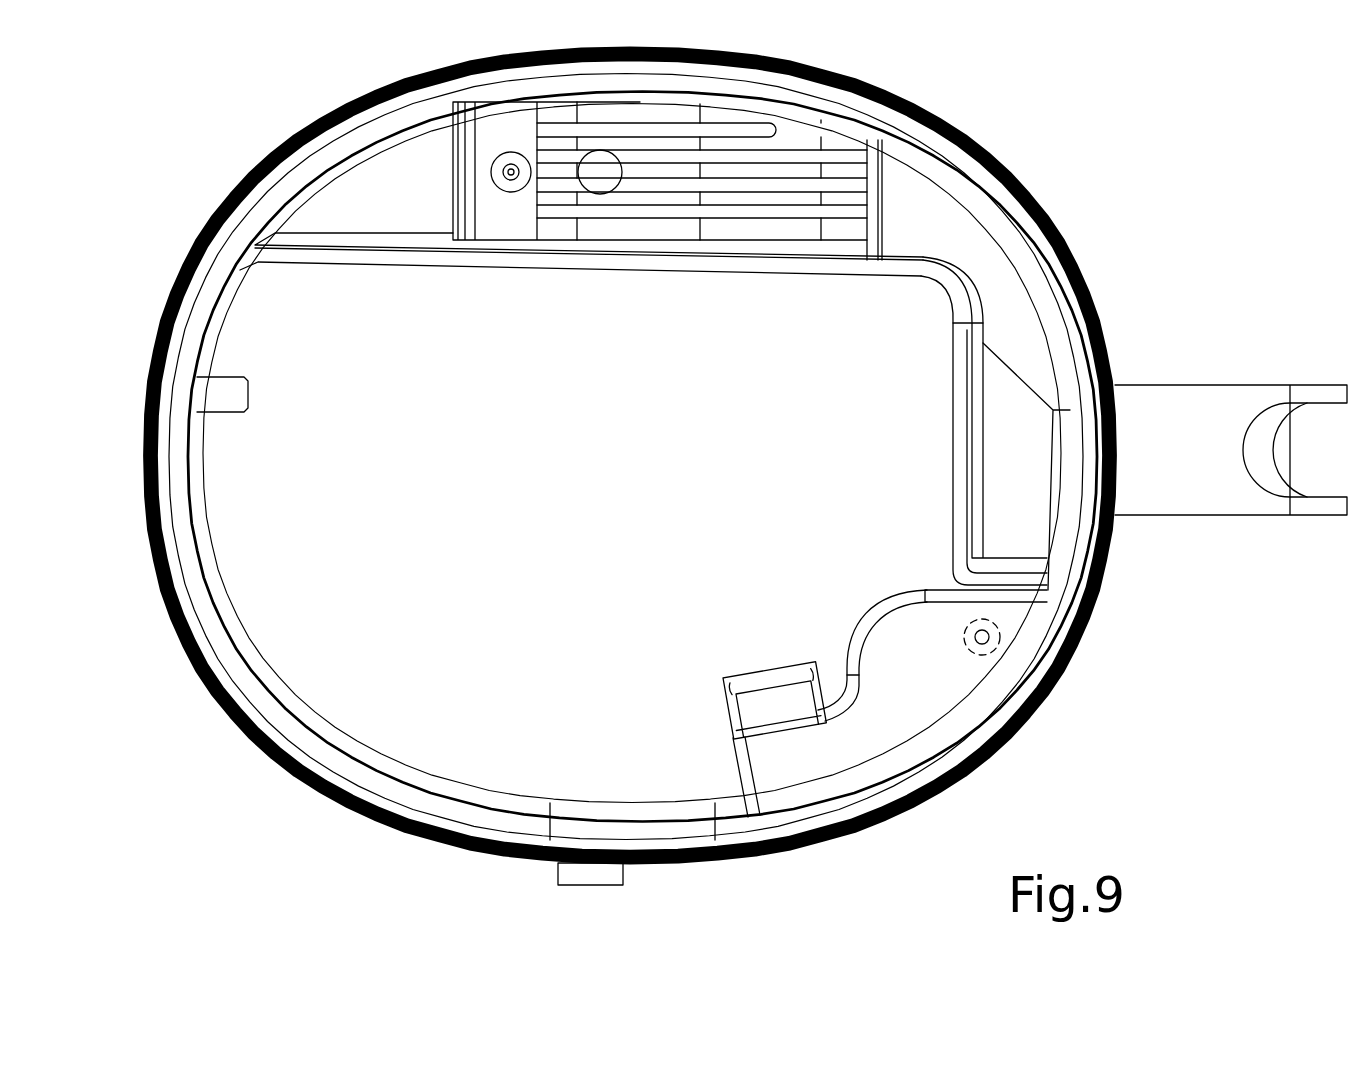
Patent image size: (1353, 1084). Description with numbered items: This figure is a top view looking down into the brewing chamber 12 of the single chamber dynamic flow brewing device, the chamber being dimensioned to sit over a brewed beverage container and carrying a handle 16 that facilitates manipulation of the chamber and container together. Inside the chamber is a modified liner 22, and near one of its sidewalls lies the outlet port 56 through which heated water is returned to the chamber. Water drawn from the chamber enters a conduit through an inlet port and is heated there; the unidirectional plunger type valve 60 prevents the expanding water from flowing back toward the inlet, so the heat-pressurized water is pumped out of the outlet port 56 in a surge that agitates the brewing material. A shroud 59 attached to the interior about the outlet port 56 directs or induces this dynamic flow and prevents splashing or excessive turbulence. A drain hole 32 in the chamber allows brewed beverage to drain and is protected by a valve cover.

The brewing chamber 12 is at (268, 764).
The handle 16 is at (1183, 492).
The liner 22 is at (216, 630).
The drain hole 32 is at (603, 185).
The outlet port 56 is at (967, 647).
The shroud 59 is at (880, 608).
The unidirectional plunger type valve 60 is at (761, 226).